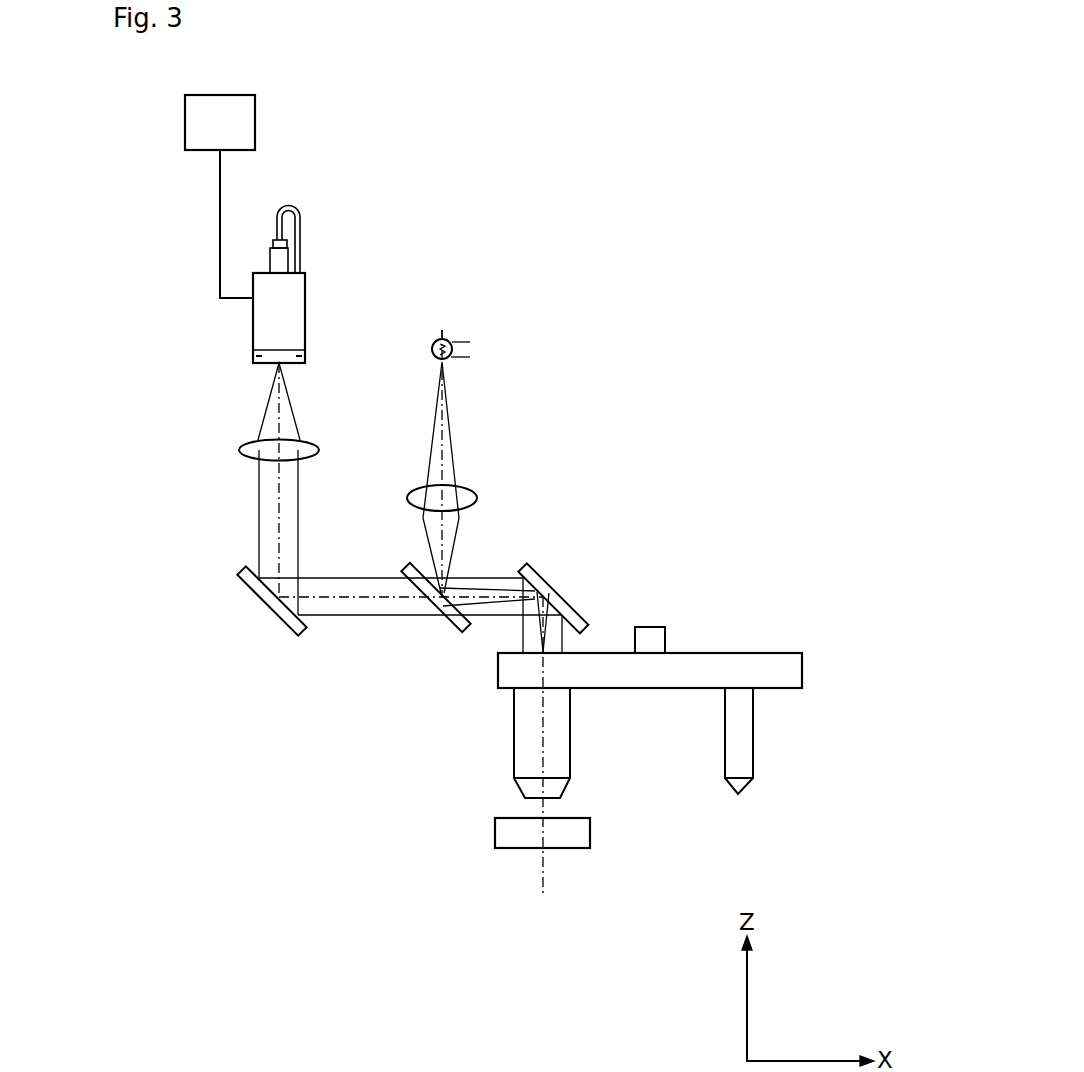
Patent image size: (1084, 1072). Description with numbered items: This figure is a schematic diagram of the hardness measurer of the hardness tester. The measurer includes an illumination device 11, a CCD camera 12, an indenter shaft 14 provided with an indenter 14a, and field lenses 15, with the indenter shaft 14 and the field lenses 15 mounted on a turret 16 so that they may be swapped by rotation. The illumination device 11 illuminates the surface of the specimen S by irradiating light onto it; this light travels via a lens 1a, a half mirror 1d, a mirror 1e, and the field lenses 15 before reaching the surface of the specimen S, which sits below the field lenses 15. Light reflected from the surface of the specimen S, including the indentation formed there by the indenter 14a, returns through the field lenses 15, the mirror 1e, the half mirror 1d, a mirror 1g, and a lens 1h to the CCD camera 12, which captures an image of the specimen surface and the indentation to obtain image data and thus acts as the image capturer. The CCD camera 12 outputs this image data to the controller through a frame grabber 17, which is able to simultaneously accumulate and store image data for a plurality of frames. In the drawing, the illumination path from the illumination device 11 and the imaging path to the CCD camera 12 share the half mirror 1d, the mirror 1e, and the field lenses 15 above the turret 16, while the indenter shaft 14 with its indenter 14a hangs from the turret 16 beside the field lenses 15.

The frame grabber 17 is at (255, 123).
The CCD camera 12 is at (307, 297).
The illumination device 11 is at (457, 342).
The lens 1h is at (245, 443).
The lens 1a is at (410, 493).
The mirror 1g is at (243, 570).
The half mirror 1d is at (458, 625).
The mirror 1e is at (543, 575).
The turret 16 is at (745, 652).
The field lenses 15 is at (570, 738).
The indenter shaft 14 is at (770, 755).
The indenter 14a is at (743, 787).
The specimen S is at (590, 832).